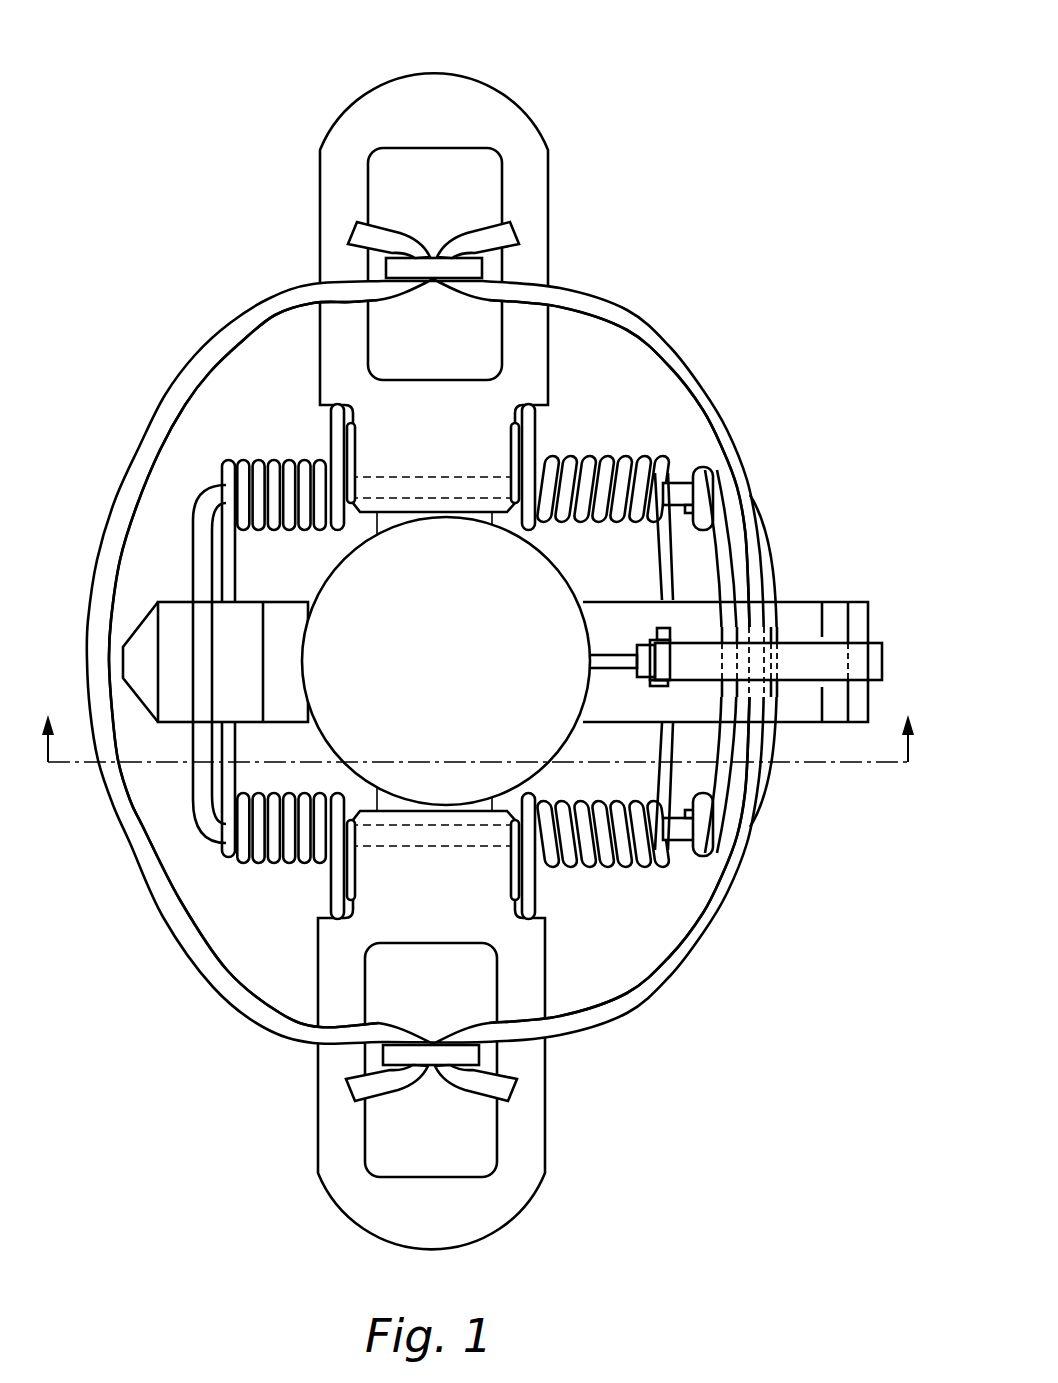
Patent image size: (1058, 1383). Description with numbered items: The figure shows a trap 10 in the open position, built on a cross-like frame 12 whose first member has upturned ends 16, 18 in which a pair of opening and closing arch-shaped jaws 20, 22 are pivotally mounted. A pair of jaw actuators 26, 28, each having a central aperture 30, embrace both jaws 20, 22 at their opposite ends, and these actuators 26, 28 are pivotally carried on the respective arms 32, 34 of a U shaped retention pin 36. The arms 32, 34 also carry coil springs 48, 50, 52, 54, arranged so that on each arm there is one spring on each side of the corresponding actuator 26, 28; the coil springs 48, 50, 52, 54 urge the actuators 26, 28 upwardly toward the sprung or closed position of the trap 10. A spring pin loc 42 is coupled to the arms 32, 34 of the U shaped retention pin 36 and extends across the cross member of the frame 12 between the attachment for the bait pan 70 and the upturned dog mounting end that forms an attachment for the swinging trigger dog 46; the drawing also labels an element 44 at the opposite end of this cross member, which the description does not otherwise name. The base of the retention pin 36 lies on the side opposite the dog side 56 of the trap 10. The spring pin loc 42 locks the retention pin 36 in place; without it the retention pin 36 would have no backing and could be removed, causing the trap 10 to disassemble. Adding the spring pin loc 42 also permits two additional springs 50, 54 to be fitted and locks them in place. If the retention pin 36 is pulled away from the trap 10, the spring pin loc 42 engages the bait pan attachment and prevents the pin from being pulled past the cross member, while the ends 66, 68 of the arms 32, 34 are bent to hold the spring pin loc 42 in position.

The trap 10 is at (197, 38).
The cross-like frame 12 is at (805, 601).
The upturned end 16 is at (432, 1072).
The upturned end 18 is at (434, 255).
The jaw 20 is at (94, 531).
The jaw 22 is at (640, 320).
The jaw actuator 26 is at (549, 182).
The jaw actuator 28 is at (548, 1180).
The central aperture 30 is at (385, 172).
The arm 32 is at (681, 478).
The arm 34 is at (683, 840).
The U shaped retention pin 36 is at (192, 531).
The spring pin loc 42 is at (730, 563).
The left shaft end 44 is at (215, 662).
The swinging trigger dog 46 is at (719, 661).
The coil spring 48 is at (260, 462).
The coil spring 50 is at (558, 460).
The coil spring 52 is at (285, 865).
The coil spring 54 is at (570, 865).
The dog side 56 is at (817, 758).
The end 66 is at (761, 514).
The end 68 is at (786, 812).
The bait pan 70 is at (446, 661).